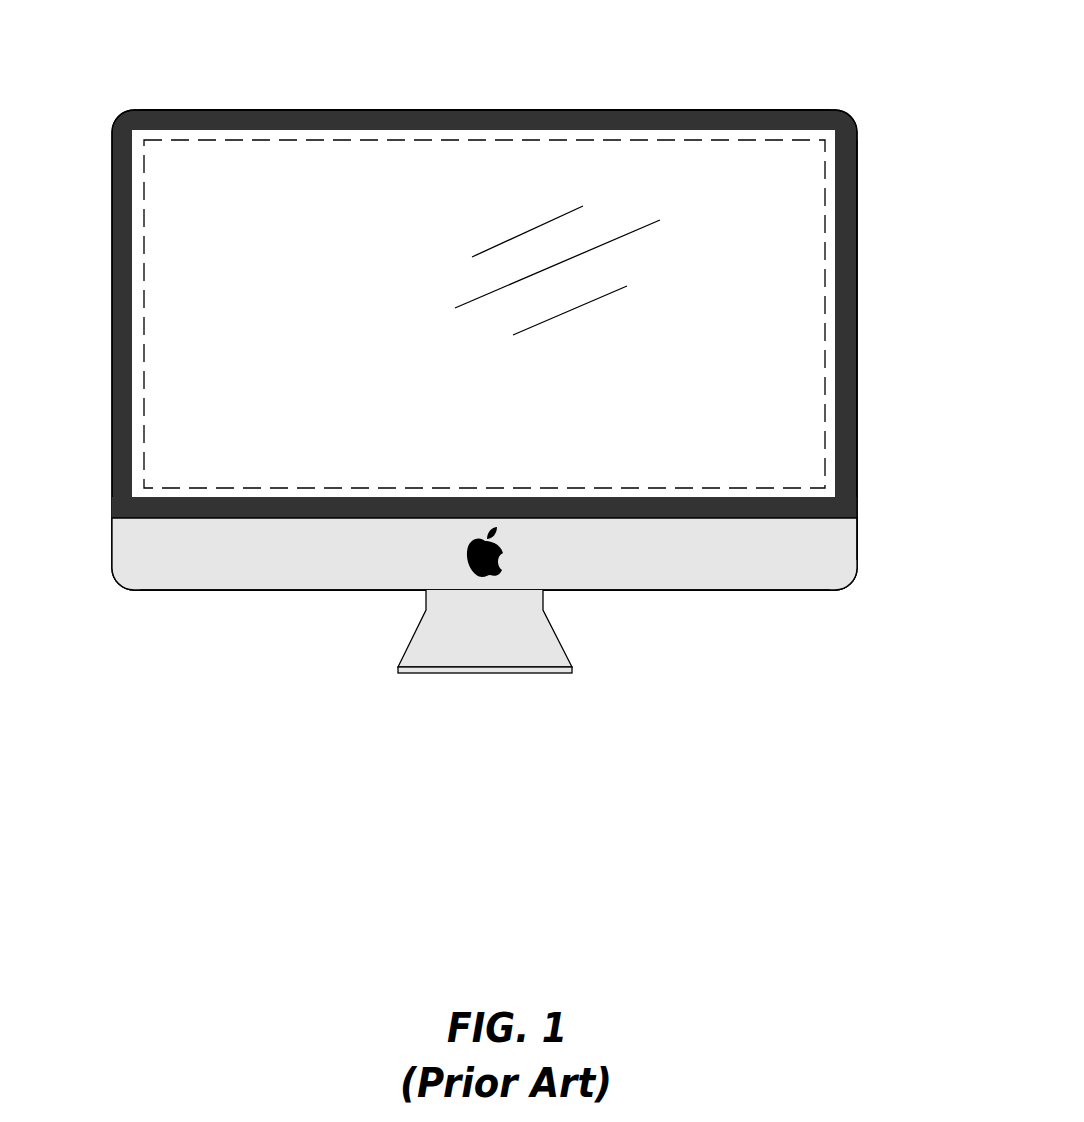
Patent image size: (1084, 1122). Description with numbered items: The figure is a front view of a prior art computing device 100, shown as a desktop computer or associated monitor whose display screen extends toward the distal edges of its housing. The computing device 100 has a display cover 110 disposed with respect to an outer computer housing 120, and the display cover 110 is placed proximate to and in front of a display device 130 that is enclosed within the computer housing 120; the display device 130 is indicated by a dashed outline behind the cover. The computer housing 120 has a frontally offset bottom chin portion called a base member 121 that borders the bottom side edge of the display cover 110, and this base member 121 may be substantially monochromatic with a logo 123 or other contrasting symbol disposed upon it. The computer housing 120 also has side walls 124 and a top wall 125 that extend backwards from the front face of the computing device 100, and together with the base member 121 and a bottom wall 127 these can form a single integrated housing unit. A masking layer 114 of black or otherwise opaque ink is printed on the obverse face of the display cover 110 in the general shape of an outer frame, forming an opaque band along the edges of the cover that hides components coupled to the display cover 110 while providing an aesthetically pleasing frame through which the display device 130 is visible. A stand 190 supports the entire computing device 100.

The computing device 100 is at (209, 68).
The display cover 110 is at (292, 313).
The masking layer 114 is at (503, 116).
The computer housing 120 is at (874, 405).
The base member 121 is at (265, 556).
The logo 123 is at (500, 565).
The side walls 124 is at (858, 270).
The top wall 125 is at (680, 110).
The bottom wall 127 is at (755, 592).
The display device 130 is at (145, 142).
The stand 190 is at (435, 632).